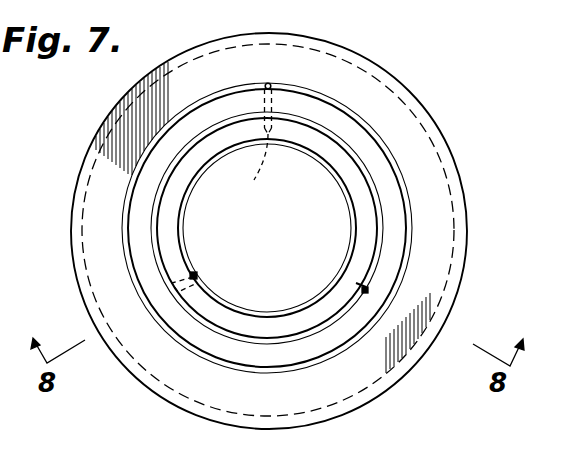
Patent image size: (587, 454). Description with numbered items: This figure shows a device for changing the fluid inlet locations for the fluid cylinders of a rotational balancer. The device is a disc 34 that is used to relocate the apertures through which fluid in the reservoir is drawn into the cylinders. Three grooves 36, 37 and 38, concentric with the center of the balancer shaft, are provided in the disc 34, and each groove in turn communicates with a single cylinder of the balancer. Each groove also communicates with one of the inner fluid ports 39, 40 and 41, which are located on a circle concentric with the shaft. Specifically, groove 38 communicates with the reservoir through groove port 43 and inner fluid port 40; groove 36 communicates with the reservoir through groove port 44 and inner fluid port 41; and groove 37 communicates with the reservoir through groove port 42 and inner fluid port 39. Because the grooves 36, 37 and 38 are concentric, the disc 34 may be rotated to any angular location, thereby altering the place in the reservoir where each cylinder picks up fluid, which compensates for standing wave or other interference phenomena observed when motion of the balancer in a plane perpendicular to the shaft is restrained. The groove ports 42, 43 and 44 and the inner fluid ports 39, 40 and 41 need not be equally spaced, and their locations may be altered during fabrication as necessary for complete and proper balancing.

The disc 34 is at (478, 230).
The groove 36 is at (390, 152).
The groove 37 is at (372, 186).
The groove 38 is at (346, 193).
The inner fluid port 39 is at (360, 285).
The inner fluid port 40 is at (197, 282).
The inner fluid port 41 is at (257, 147).
The groove port 42 is at (366, 291).
The groove port 43 is at (198, 271).
The groove port 44 is at (272, 84).